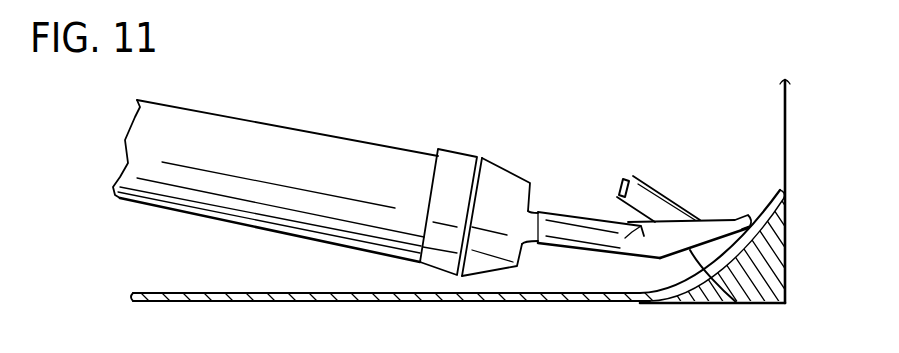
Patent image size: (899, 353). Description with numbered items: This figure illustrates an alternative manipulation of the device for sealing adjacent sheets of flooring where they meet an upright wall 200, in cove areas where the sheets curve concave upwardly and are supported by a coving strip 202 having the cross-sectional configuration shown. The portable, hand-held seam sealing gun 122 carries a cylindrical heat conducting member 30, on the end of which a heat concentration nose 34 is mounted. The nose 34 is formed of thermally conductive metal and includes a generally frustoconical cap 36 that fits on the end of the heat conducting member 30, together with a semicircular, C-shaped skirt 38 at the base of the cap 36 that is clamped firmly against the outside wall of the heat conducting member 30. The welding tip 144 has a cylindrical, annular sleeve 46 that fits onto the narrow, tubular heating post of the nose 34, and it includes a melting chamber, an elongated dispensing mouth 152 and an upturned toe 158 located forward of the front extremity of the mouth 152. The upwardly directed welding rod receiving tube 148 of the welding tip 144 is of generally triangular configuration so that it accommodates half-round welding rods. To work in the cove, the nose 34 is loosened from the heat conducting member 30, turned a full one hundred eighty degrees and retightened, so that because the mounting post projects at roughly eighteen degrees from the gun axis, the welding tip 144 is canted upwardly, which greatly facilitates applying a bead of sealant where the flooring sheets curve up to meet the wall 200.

The seam sealing gun 122 is at (270, 99).
The heat conducting member 30 is at (360, 150).
The skirt 38 is at (455, 150).
The heat concentration nose 34 is at (494, 146).
The cap 36 is at (513, 180).
The sleeve 46 is at (602, 238).
The welding tip 144 is at (600, 184).
The welding rod receiving tube 148 is at (655, 197).
The upturned toe 158 is at (738, 217).
The wall 200 is at (782, 110).
The coving strip 202 is at (763, 263).
The elongated mouth 152 is at (737, 303).